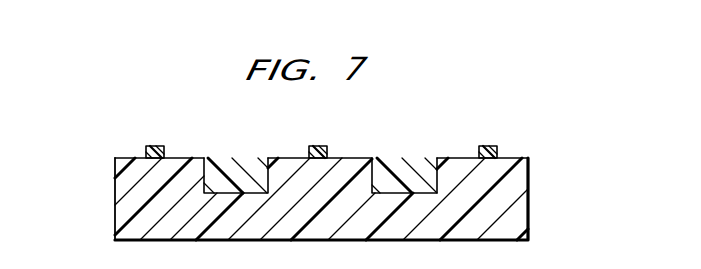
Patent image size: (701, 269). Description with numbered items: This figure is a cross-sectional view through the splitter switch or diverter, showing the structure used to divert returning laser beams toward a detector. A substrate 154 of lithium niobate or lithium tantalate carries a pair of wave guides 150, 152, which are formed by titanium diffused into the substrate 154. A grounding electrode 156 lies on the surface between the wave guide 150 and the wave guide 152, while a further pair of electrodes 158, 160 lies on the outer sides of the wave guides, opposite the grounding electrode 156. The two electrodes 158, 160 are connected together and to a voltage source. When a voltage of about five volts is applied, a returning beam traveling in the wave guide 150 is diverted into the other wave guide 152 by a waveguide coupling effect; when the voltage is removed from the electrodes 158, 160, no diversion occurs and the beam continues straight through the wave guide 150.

The wave guide 150 is at (407, 158).
The wave guide 152 is at (232, 157).
The substrate 154 is at (529, 176).
The grounding electrode 156 is at (320, 145).
The electrode 158 is at (488, 145).
The electrode 160 is at (155, 145).